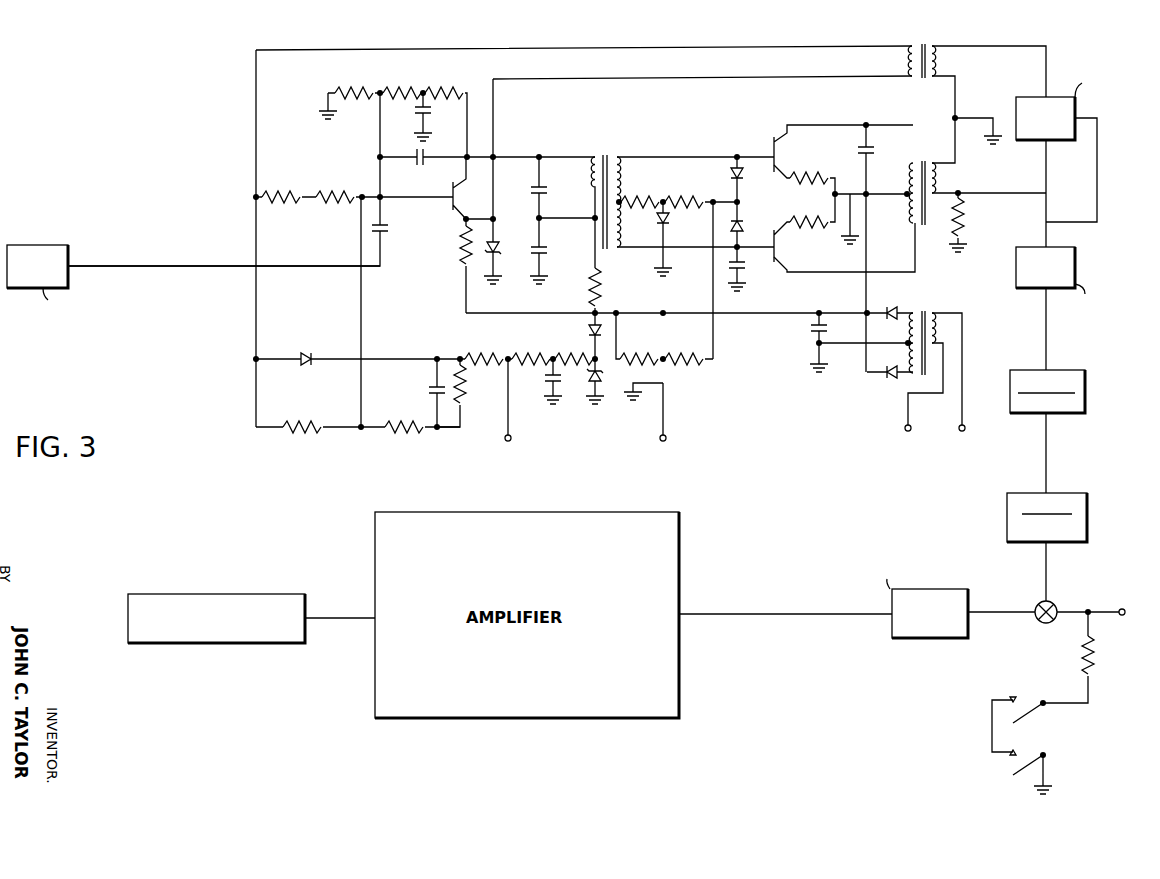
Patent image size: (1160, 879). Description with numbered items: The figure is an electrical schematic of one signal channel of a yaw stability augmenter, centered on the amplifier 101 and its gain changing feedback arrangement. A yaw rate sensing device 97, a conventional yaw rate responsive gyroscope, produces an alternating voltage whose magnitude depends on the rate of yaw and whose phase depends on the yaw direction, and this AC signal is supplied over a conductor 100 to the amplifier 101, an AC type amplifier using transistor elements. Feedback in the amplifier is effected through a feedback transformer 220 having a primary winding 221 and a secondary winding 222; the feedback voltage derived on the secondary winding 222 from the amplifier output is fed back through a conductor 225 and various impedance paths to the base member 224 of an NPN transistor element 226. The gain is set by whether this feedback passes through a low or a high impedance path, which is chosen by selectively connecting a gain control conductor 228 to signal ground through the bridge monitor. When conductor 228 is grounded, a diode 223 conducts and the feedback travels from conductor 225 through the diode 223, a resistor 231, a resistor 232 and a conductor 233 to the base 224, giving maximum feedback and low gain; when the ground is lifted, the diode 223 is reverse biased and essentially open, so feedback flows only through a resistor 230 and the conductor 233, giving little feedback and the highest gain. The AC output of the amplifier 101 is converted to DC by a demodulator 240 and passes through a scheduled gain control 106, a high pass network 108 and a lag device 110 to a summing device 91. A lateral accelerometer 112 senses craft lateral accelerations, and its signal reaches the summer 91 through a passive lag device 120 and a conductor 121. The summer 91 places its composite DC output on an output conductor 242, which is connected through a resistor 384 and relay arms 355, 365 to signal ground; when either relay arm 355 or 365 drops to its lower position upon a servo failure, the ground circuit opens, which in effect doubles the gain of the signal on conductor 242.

The yaw rate sensing device 97 is at (22, 246).
The yaw rate signal line 100 is at (226, 260).
The amplifier-demodulator 101 is at (603, 117).
The scheduled gain control 106 is at (1005, 273).
The high pass network 108 is at (1026, 416).
The lag device 110 is at (1007, 510).
The accelerometer 112 is at (245, 645).
The passive lag device 120 is at (902, 640).
The conductor 121 is at (993, 611).
The summing device 91 is at (1056, 606).
The output conductor 242 is at (1107, 612).
The resistor 384 is at (1094, 655).
The relay arm 355 is at (1036, 711).
The relay arm 365 is at (1026, 773).
The feedback transformer 220 is at (923, 50).
The primary winding 221 is at (938, 62).
The secondary winding 222 is at (906, 63).
The diode 223 is at (302, 350).
The base member 224 is at (447, 212).
The conductor 225 is at (585, 49).
The NPN transistor element 226 is at (488, 203).
The gain control conductor 228 is at (511, 427).
The resistor 230 is at (294, 433).
The resistor 231 is at (463, 402).
The resistor 232 is at (399, 433).
The conductor 233 is at (361, 350).
The demodulator 240 is at (1021, 97).